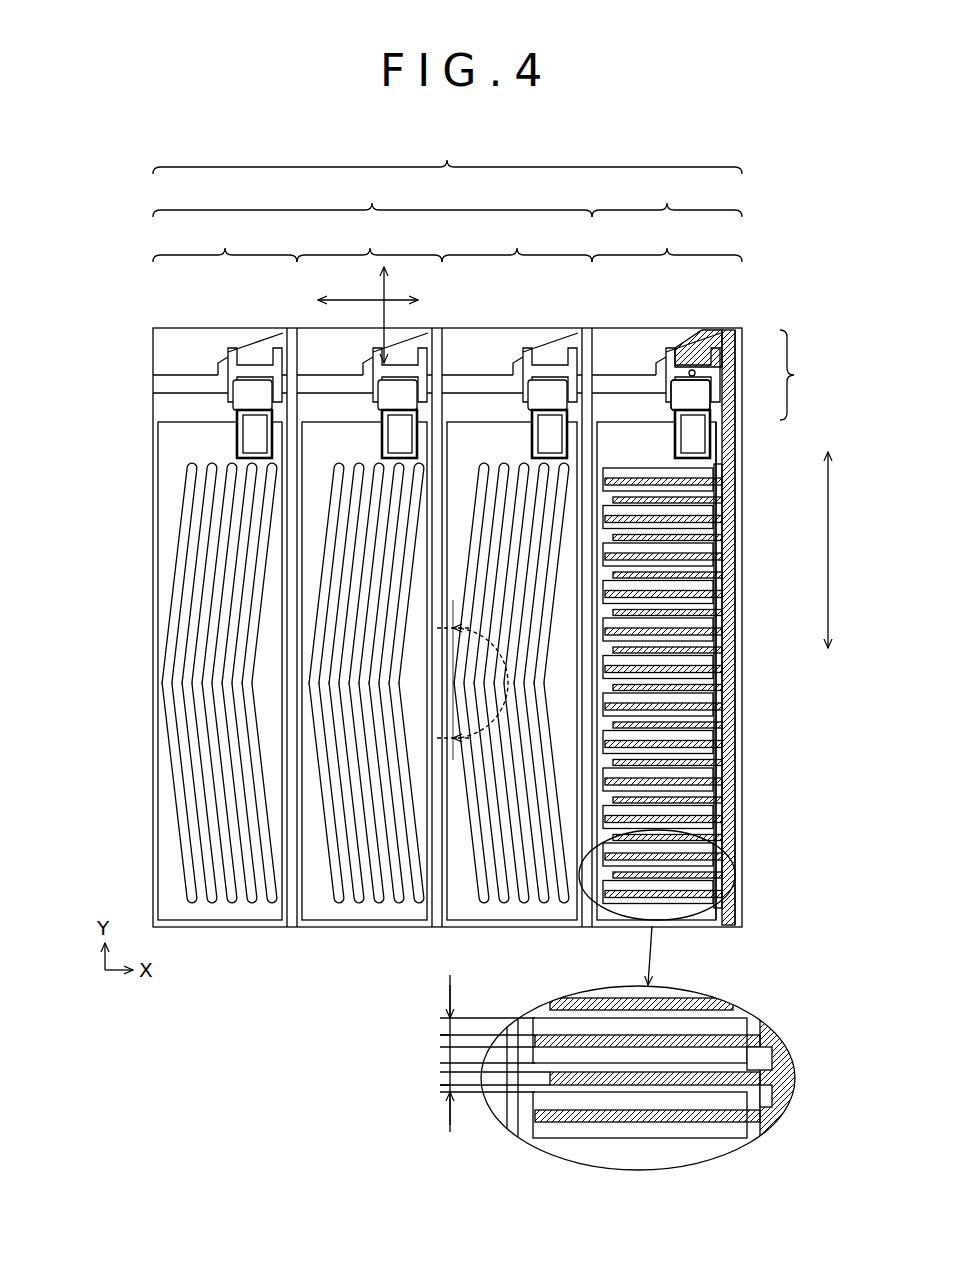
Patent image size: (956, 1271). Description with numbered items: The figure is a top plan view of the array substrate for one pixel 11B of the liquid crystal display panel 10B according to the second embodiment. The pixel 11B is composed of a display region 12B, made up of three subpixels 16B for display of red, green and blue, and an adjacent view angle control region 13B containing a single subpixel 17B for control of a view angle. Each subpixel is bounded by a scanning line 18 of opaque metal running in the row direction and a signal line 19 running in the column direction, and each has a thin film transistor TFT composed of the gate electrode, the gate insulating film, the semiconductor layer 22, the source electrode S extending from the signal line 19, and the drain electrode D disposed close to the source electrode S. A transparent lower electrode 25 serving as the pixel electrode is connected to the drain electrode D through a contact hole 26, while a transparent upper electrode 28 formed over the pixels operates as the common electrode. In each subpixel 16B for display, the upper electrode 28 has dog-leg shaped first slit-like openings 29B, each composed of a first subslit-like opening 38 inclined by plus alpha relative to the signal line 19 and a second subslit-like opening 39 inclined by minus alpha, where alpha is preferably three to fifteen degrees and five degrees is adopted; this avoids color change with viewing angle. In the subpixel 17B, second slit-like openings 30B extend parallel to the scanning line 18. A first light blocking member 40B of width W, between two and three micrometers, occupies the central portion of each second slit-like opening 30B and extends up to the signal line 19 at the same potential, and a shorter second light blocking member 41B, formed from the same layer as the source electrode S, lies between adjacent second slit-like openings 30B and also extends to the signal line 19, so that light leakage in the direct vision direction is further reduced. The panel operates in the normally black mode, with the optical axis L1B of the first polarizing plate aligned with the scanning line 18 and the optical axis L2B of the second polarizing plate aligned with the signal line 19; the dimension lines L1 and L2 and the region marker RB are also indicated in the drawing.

The liquid crystal display panel 10B is at (125, 154).
The pixel 11B is at (447, 156).
The display region 12B is at (372, 199).
The view angle control region 13B is at (667, 199).
The subpixel for display 16B is at (372, 244).
The subpixel for control of a view angle 17B is at (667, 244).
The scanning line 18 is at (190, 380).
The signal line 19 is at (716, 480).
The semiconductor layer 22 is at (696, 372).
The lower electrode 25 is at (158, 855).
The contact hole 26 is at (700, 436).
The upper electrode 28 is at (178, 442).
The first slit-like opening 29B is at (167, 687).
The second slit-like opening 30B is at (716, 828).
The first subslit-like opening 38 is at (178, 568).
The second subslit-like opening 39 is at (178, 803).
The first light blocking member 40B is at (716, 780).
The second light blocking member 41B is at (716, 725).
The source electrode S is at (692, 345).
The drain electrode D is at (700, 392).
The thin film transistor TFT is at (745, 391).
The reflective region RB is at (816, 550).
The optical axis of the first polarizing plate L1B is at (368, 288).
The optical axis of the second polarizing plate L2B is at (371, 315).
The wide slit width L1 is at (447, 1018).
The branch pitch L2 is at (447, 1092).
The width W is at (440, 1041).
The inclination angle alpha is at (472, 680).